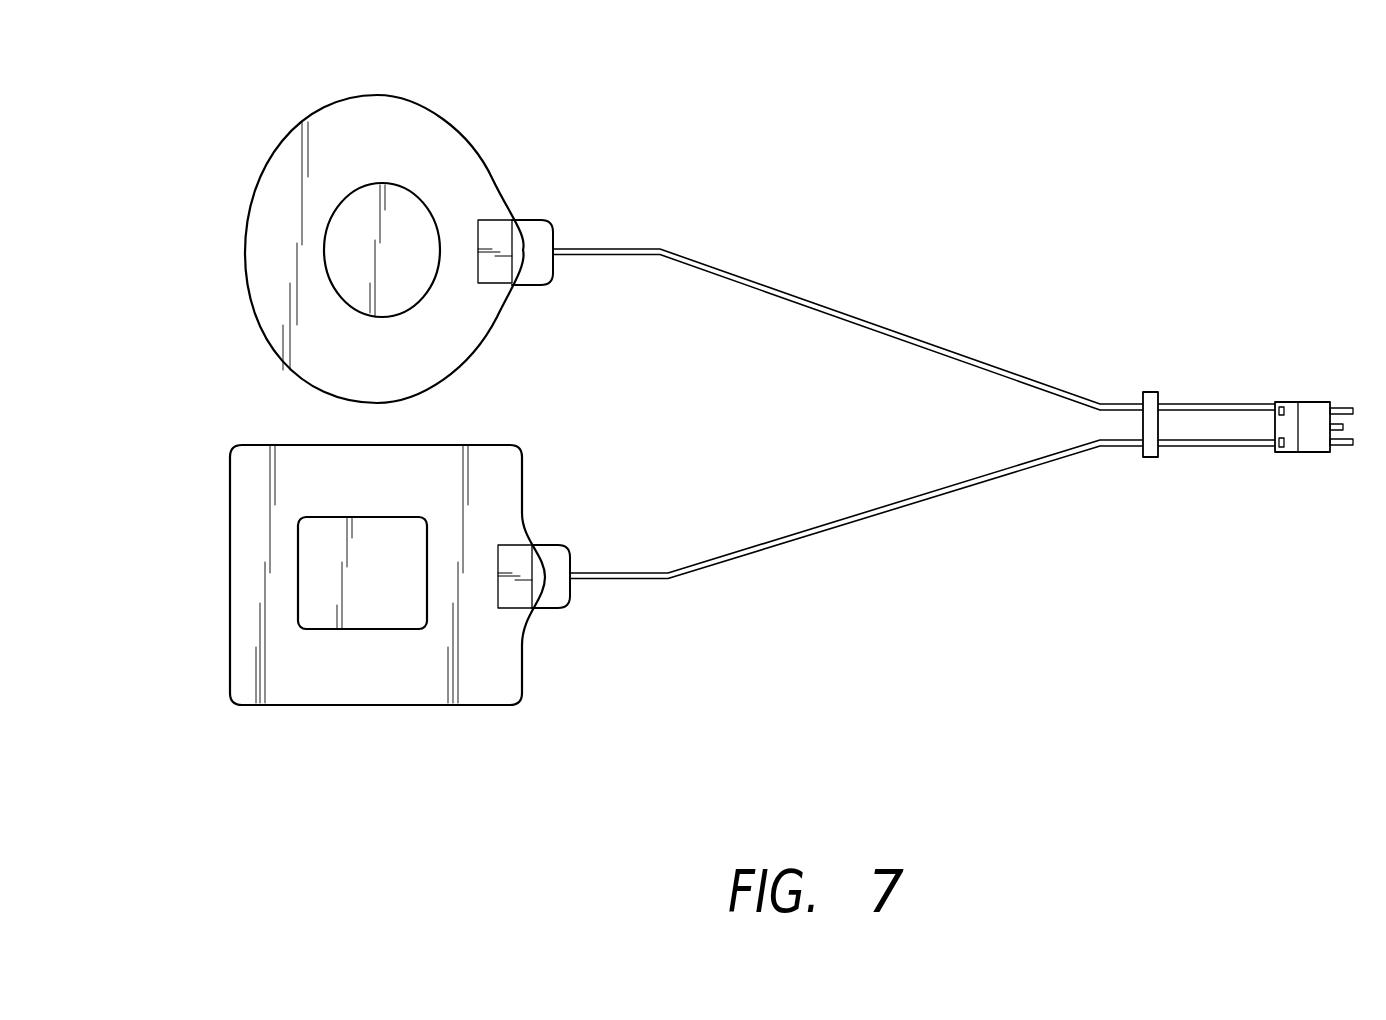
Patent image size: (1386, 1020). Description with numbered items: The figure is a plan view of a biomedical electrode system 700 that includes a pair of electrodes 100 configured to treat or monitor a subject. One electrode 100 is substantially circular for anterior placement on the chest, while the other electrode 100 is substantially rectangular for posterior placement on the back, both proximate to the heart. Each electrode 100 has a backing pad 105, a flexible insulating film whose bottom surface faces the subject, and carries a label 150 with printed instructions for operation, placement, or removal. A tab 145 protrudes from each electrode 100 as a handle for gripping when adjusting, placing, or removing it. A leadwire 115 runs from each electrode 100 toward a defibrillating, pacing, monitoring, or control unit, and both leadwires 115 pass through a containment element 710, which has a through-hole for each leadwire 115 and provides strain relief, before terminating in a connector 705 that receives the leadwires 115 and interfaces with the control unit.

The electrode 100 is at (223, 108).
The backing pad 105 is at (270, 160).
The leadwire 115 is at (820, 302).
The tab 145 is at (550, 218).
The label 150 is at (497, 218).
The biomedical electrode system 700 is at (715, 120).
The connector 705 is at (1280, 402).
The containment element 710 is at (1158, 392).